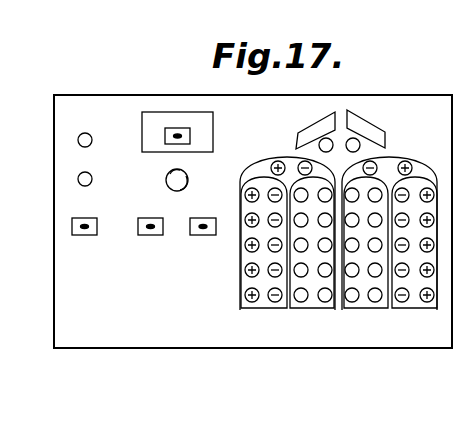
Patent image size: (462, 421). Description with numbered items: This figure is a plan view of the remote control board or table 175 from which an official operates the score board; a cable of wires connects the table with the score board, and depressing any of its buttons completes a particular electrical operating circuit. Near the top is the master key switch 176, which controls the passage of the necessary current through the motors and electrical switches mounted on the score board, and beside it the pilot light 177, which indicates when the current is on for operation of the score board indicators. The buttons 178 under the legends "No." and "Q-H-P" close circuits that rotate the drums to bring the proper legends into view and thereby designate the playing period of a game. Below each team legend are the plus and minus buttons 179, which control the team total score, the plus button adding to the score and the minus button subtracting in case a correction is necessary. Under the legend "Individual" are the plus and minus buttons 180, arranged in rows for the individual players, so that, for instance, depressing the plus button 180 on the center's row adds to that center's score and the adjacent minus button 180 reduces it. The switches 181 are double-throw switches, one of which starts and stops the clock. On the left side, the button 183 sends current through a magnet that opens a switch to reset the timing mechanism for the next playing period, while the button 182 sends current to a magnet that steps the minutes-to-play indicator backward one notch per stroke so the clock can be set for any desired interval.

The control board 175 is at (56, 295).
The master key switch 176 is at (186, 112).
The pilot light 177 is at (189, 180).
The buttons 178 is at (350, 151).
The plus and minus buttons 179 is at (292, 160).
The plus and minus buttons 180 is at (275, 302).
The double-throw switches 181 is at (192, 236).
The button 182 is at (95, 187).
The button 183 is at (95, 148).